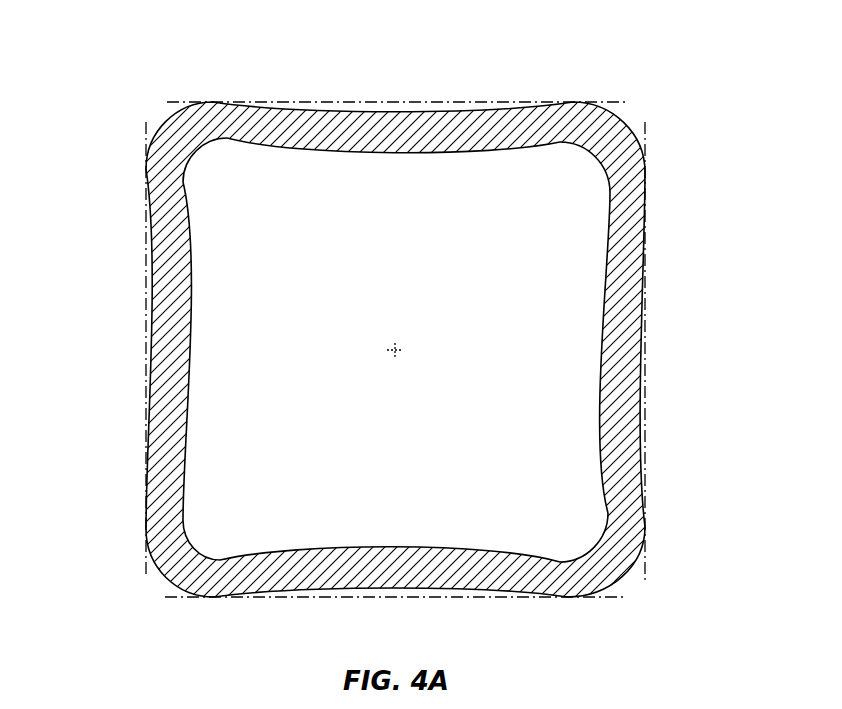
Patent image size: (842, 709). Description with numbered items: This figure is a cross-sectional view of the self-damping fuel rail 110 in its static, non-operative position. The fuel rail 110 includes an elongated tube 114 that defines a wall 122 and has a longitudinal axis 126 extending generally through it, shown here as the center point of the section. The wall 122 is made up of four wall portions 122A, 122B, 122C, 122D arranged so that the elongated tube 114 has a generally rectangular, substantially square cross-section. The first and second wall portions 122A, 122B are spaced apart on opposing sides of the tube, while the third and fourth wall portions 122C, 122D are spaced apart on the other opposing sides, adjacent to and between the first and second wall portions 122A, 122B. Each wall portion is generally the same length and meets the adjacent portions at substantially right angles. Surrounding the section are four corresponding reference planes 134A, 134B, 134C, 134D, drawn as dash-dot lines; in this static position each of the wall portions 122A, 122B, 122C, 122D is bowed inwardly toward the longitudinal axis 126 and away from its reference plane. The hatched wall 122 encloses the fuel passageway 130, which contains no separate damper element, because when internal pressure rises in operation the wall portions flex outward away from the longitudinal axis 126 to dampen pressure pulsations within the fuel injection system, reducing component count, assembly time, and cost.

The self-damping fuel rail 110 is at (421, 357).
The elongated tube 114 is at (226, 101).
The wall 122 is at (396, 350).
The first wall portion 122A is at (190, 342).
The second wall portion 122B is at (603, 333).
The third wall portion 122C is at (408, 141).
The fourth wall portion 122D is at (407, 556).
The longitudinal axis 126 is at (403, 347).
The fuel passageway 130 is at (568, 537).
The reference plane 134A is at (146, 318).
The reference plane 134B is at (646, 298).
The reference plane 134C is at (405, 100).
The reference plane 134D is at (290, 598).